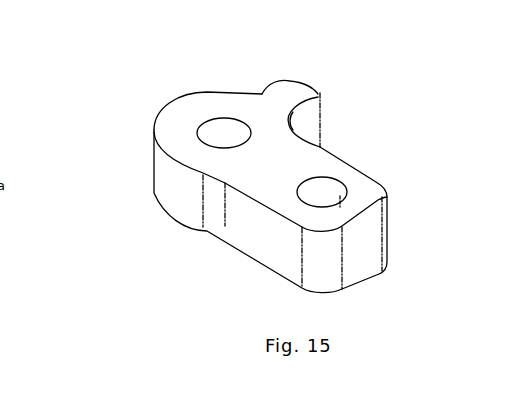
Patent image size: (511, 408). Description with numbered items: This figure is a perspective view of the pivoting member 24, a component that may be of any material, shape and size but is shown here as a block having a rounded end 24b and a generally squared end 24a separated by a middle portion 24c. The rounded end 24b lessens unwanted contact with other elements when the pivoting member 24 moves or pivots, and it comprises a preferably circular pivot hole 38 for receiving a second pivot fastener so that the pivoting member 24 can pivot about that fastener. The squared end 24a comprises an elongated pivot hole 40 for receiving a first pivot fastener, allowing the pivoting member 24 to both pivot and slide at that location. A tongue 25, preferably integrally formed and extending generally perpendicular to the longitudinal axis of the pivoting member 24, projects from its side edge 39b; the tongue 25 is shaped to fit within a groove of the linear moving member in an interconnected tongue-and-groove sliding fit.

The pivoting member 24 is at (178, 250).
The squared end 24a is at (407, 263).
The rounded end 24b is at (168, 93).
The middle portion 24c is at (338, 140).
The tongue 25 is at (319, 93).
The pivot hole 38 is at (212, 132).
The side edge 39b is at (176, 188).
The elongated pivot hole 40 is at (333, 188).